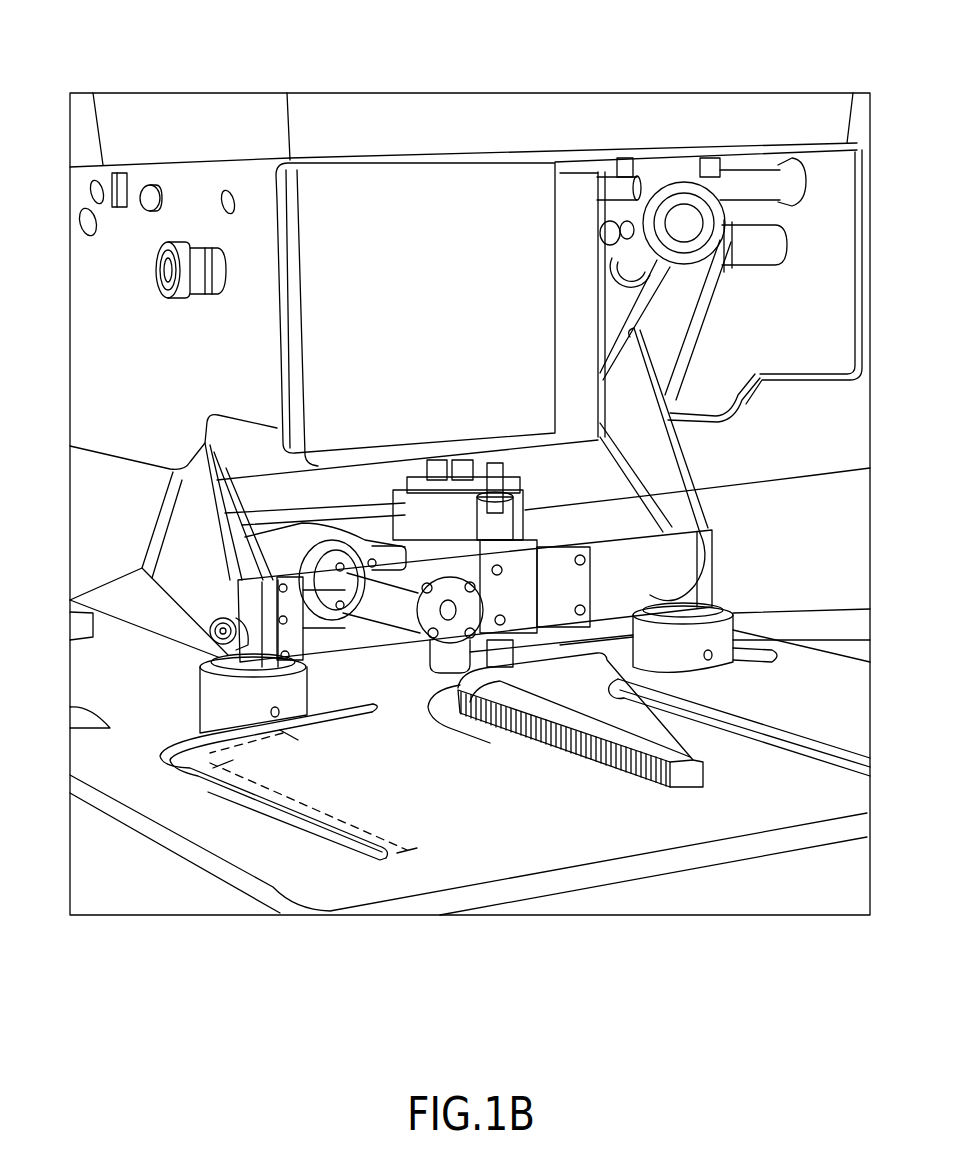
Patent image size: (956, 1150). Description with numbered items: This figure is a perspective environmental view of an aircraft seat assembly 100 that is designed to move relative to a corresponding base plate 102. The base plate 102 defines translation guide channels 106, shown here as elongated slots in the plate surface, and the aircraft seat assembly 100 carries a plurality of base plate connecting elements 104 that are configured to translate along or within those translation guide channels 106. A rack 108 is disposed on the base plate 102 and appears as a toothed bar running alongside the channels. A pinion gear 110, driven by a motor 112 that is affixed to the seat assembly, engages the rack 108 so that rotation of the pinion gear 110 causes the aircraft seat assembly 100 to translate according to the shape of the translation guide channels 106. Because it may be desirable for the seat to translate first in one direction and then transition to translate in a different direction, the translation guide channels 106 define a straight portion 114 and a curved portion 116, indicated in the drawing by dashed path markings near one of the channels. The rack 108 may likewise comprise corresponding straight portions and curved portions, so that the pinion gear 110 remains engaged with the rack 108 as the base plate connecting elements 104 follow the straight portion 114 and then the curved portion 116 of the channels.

The aircraft seat assembly 100 is at (155, 50).
The base plate 102 is at (380, 895).
The base plate connecting elements 104 is at (220, 705).
The translation guide channels 106 is at (208, 792).
The rack 108 is at (687, 777).
The pinion gear 110 is at (712, 608).
The motor 112 is at (493, 527).
The straight portion 114 is at (302, 805).
The curved portion 116 is at (252, 743).